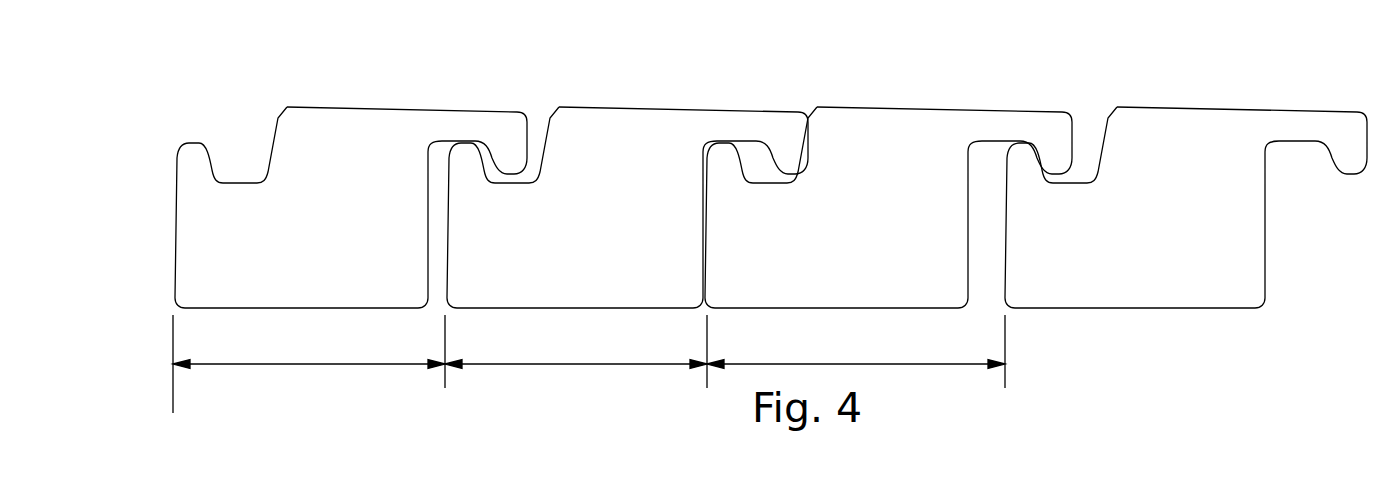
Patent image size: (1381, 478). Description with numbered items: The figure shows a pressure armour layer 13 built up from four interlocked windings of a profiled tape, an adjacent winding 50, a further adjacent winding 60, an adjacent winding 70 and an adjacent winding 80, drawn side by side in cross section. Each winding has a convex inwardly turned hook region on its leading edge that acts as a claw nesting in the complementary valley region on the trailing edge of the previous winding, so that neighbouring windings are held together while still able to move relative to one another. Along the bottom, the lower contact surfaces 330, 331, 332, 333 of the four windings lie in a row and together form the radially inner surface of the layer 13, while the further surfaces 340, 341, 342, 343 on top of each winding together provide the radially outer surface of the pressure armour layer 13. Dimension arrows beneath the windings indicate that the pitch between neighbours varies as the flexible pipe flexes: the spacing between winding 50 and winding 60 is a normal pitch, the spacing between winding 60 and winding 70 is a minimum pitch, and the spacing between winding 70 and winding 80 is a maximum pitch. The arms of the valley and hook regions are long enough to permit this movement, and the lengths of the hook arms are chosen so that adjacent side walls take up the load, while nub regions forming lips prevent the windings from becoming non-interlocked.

The pressure armour layer 13 is at (123, 165).
The further surface 340 is at (338, 107).
The further surface 341 is at (665, 107).
The further surface 342 is at (886, 107).
The further surface 343 is at (1172, 107).
The adjacent winding 50 is at (351, 164).
The adjacent winding 60 is at (627, 164).
The adjacent winding 70 is at (888, 164).
The adjacent winding 80 is at (1186, 164).
The lower contact surface 330 is at (292, 309).
The lower contact surface 331 is at (573, 309).
The lower contact surface 332 is at (813, 309).
The lower contact surface 333 is at (1135, 309).